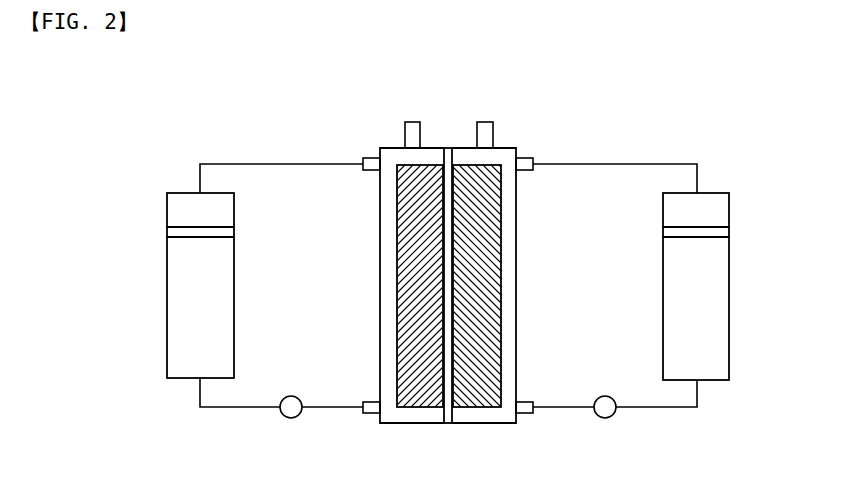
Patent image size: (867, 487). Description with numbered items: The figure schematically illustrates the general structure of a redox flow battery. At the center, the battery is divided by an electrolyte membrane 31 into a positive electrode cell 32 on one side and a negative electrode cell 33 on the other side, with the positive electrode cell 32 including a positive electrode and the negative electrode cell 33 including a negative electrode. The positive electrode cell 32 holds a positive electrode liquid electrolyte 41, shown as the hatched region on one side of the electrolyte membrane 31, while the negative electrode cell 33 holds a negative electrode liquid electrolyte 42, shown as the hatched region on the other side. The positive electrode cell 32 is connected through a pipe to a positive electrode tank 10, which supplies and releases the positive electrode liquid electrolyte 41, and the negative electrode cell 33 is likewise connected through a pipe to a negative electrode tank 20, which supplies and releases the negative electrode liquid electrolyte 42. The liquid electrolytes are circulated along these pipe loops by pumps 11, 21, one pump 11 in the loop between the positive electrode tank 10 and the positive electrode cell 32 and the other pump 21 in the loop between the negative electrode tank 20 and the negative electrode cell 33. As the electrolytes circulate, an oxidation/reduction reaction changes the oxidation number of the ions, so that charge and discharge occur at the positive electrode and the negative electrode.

The positive electrode tank 10 is at (167, 301).
The pump 11 is at (290, 418).
The negative electrode tank 20 is at (729, 300).
The pump 21 is at (603, 418).
The electrolyte membrane 31 is at (445, 147).
The positive electrode cell 32 is at (412, 423).
The negative electrode cell 33 is at (485, 423).
The positive electrode liquid electrolyte 41 is at (420, 358).
The negative electrode liquid electrolyte 42 is at (500, 302).